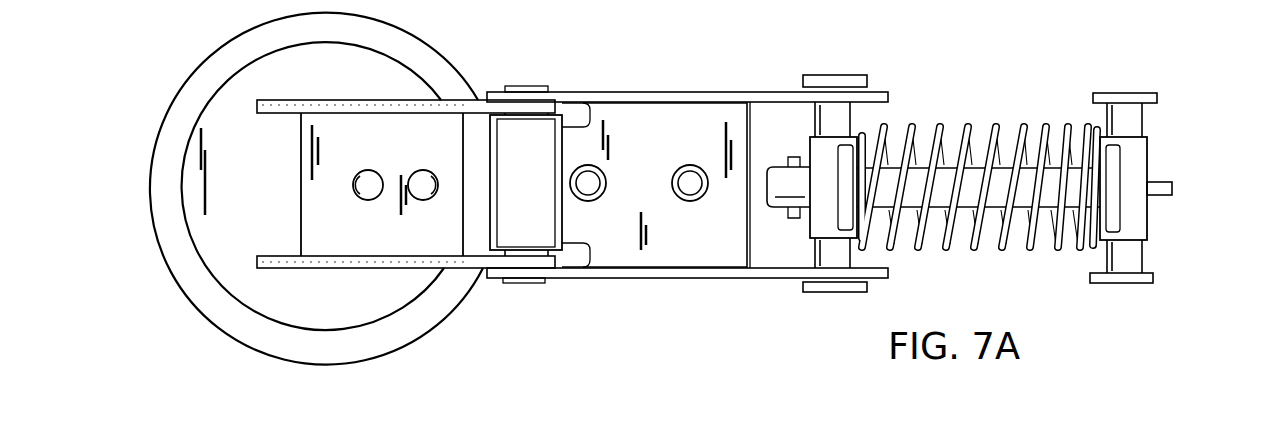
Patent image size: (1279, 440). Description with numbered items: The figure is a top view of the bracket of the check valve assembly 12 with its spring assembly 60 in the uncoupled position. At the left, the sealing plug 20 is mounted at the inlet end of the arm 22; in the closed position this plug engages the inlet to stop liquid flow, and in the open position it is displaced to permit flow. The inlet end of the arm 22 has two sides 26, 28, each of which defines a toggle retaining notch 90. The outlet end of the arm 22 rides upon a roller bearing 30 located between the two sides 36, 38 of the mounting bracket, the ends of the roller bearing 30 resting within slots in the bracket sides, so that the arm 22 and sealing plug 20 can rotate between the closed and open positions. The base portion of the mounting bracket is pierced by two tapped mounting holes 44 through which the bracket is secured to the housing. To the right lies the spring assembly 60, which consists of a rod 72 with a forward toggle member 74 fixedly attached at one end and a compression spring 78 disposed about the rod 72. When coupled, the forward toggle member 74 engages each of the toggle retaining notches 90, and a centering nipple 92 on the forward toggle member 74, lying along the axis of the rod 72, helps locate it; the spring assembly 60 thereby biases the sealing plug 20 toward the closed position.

The check valve assembly 12 is at (1075, 50).
The sealing plug 20 is at (441, 323).
The arm 22 is at (458, 96).
The side of arm 26 is at (423, 268).
The side of arm 28 is at (414, 100).
The roller bearing 30 is at (536, 283).
The side of mounting bracket 36 is at (688, 280).
The side of mounting bracket 38 is at (726, 92).
The tapped mounting holes 44 is at (604, 176).
The spring assembly 60 is at (979, 114).
The rod 72 is at (935, 160).
The forward toggle member 74 is at (1159, 131).
The compression spring 78 is at (968, 250).
The toggle retaining notches 90 is at (331, 100).
The centering nipple 92 is at (1161, 180).